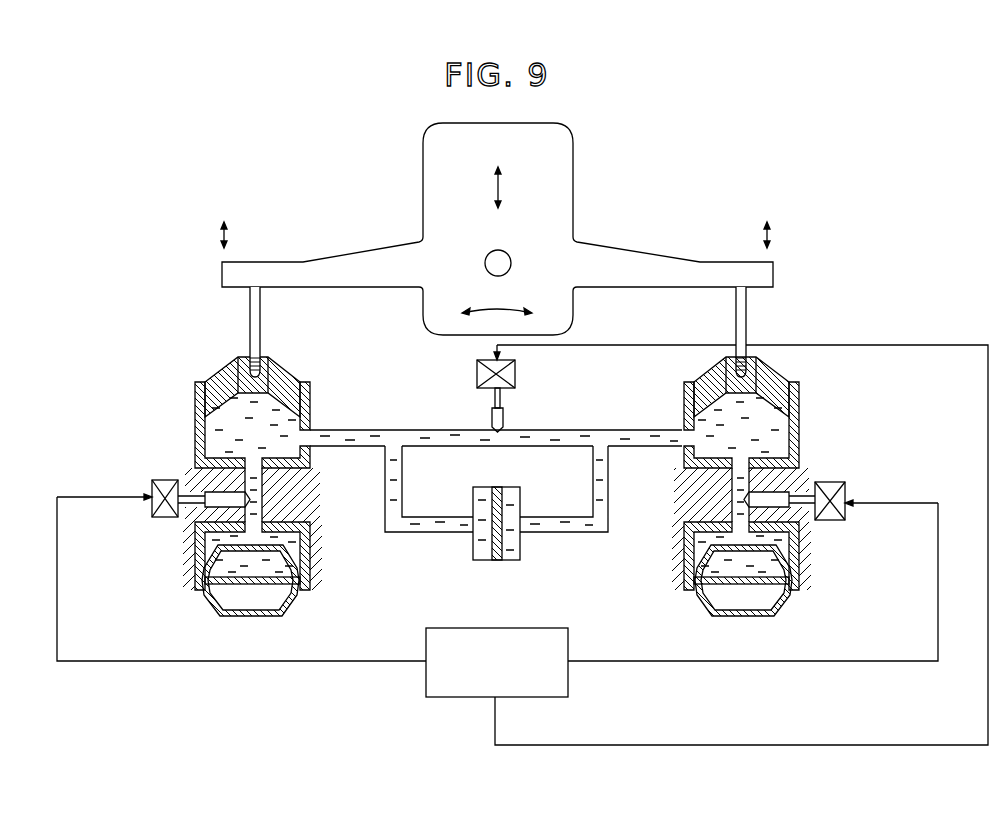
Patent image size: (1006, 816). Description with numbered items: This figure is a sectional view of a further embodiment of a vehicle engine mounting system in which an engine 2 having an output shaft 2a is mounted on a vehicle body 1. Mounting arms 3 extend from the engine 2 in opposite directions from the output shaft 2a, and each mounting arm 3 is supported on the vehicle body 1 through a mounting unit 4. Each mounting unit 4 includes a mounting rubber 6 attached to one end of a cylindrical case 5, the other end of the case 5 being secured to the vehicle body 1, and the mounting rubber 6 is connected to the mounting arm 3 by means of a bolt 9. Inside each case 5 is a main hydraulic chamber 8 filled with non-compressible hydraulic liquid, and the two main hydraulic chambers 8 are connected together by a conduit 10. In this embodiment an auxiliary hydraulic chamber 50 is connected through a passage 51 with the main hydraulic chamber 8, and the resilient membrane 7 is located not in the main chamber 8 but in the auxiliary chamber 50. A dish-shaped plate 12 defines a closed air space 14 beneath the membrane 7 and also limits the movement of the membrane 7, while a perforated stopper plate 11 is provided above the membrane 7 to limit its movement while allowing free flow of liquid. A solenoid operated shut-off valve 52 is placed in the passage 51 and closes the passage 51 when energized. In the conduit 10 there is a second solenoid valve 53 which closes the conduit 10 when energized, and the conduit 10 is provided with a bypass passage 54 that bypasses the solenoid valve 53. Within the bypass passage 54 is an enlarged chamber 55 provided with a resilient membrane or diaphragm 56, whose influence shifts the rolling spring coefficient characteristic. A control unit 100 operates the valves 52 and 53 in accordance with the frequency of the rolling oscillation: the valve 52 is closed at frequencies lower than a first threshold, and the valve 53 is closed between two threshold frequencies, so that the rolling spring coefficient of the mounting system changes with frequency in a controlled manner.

The vehicle body 1 is at (676, 564).
The engine 2 is at (578, 136).
The output shaft 2a is at (508, 254).
The mounting arm 3 is at (325, 262).
The mounting unit 4 is at (193, 396).
The cylindrical case 5 is at (458, 370).
The mounting rubber 6 is at (284, 375).
The resilient membrane 7 is at (253, 584).
The main hydraulic chamber 8 is at (220, 432).
The bolt 9 is at (249, 306).
The conduit 10 is at (586, 430).
The perforated stopper plate 11 is at (222, 587).
The dish-shaped plate 12 is at (238, 599).
The closed air space 14 is at (233, 590).
The auxiliary hydraulic chamber 50 is at (218, 538).
The passage 51 is at (258, 508).
The solenoid operated shut-off valve 52 is at (160, 480).
The second solenoid valve 53 is at (517, 376).
The bypass passage 54 is at (412, 532).
The enlarged chamber 55 is at (522, 511).
The resilient membrane or diaphragm 56 is at (504, 536).
The control unit 100 is at (482, 628).